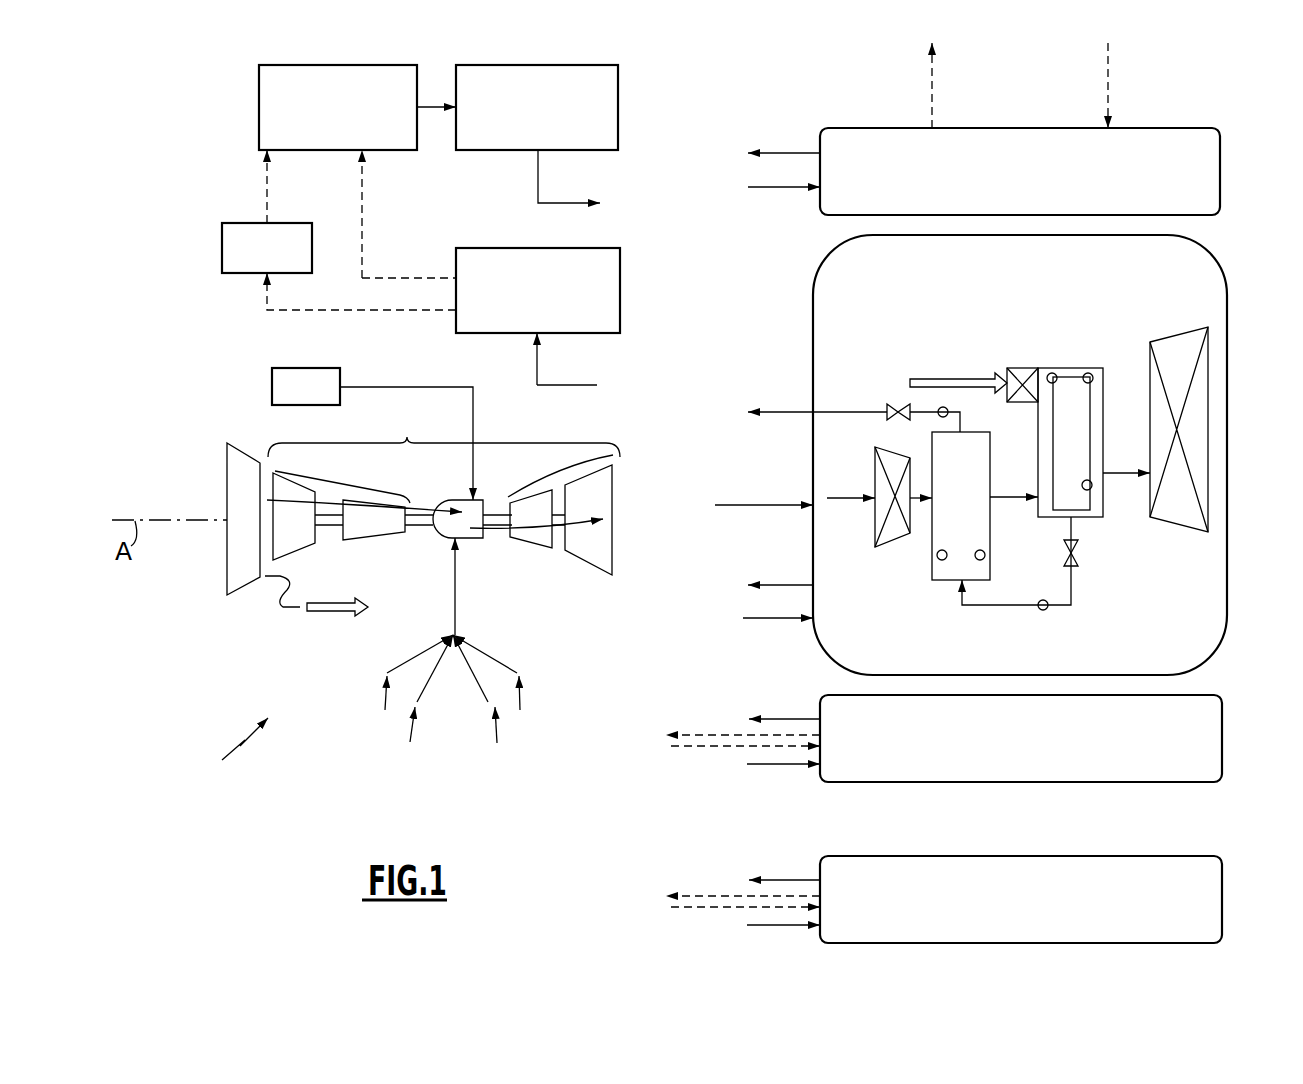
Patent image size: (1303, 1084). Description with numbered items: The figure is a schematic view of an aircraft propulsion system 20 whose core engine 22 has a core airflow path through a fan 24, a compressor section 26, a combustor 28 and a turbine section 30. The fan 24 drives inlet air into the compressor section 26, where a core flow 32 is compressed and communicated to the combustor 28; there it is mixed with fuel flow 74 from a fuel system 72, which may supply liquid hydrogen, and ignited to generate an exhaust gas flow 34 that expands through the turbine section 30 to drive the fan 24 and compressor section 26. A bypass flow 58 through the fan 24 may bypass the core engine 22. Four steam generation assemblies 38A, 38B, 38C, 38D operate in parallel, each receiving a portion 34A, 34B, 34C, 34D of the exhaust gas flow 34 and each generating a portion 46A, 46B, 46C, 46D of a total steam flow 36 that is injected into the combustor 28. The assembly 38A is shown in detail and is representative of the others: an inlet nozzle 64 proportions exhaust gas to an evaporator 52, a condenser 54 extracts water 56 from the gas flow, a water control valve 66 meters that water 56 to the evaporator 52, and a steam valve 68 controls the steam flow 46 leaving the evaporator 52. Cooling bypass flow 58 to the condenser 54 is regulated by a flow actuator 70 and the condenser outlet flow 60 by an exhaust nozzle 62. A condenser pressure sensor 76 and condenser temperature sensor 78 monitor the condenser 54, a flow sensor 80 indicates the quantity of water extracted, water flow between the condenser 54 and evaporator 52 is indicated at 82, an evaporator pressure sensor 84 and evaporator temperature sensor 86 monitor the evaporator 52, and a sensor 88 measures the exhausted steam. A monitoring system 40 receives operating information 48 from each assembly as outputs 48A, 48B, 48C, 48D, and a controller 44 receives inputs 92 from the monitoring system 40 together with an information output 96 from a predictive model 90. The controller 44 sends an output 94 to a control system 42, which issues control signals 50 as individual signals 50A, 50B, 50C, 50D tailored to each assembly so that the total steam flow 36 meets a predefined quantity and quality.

The aircraft propulsion system 20 is at (228, 753).
The core engine 22 is at (444, 433).
The fan 24 is at (243, 582).
The compressor section 26 is at (342, 484).
The combustor 28 is at (455, 502).
The turbine section 30 is at (549, 485).
The core flow 32 is at (370, 513).
The exhaust gas flow 34 is at (538, 530).
The portion of exhaust gas flow 34A is at (767, 505).
The portion of exhaust gas flow 34B is at (773, 219).
The portion of exhaust gas flow 34C is at (776, 765).
The portion of exhaust gas flow 34D is at (776, 926).
The total steam flow 36 is at (455, 578).
The steam generation assembly 38A is at (1207, 300).
The steam generation assembly 38B is at (1210, 167).
The steam generation assembly 38C is at (1210, 736).
The steam generation assembly 38D is at (1210, 897).
The monitoring system 40 is at (489, 333).
The control system 42 is at (618, 103).
The controller 44 is at (259, 110).
The steam flow 46 is at (842, 396).
The portion of total steam flow 46A is at (385, 708).
The portion of total steam flow 46B is at (410, 742).
The portion of total steam flow 46C is at (497, 743).
The portion of total steam flow 46D is at (520, 710).
The operating information 48 is at (630, 420).
The operating information 48A is at (768, 586).
The operating information 48B is at (932, 92).
The operating information 48C is at (705, 735).
The operating information 48D is at (705, 896).
The control signals 50 is at (643, 237).
The individual control signal 50A is at (770, 619).
The individual control signal 50B is at (1108, 92).
The individual control signal 50C is at (691, 747).
The individual control signal 50D is at (691, 908).
The evaporator 52 is at (947, 580).
The condenser 54 is at (1103, 517).
The water 56 is at (1072, 606).
The bypass flow 58 is at (335, 612).
The outlet flow 60 is at (1113, 472).
The exhaust nozzle 62 is at (1178, 517).
The inlet nozzle 64 is at (875, 520).
The water control valve 66 is at (1078, 555).
The steam valve 68 is at (893, 406).
The flow actuator 70 is at (1015, 369).
The fuel system 72 is at (272, 391).
The fuel flow 74 is at (397, 386).
The condenser pressure sensor 76 is at (1047, 372).
The condenser temperature sensor 78 is at (1092, 372).
The flow sensor 80 is at (1092, 488).
The water flow information 82 is at (1045, 600).
The evaporator pressure sensor 84 is at (937, 558).
The evaporator temperature sensor 86 is at (982, 550).
The sensor 88 is at (940, 416).
The predictive model 90 is at (240, 273).
The inputs 92 is at (362, 218).
The output 94 is at (428, 108).
The information output 96 is at (267, 195).